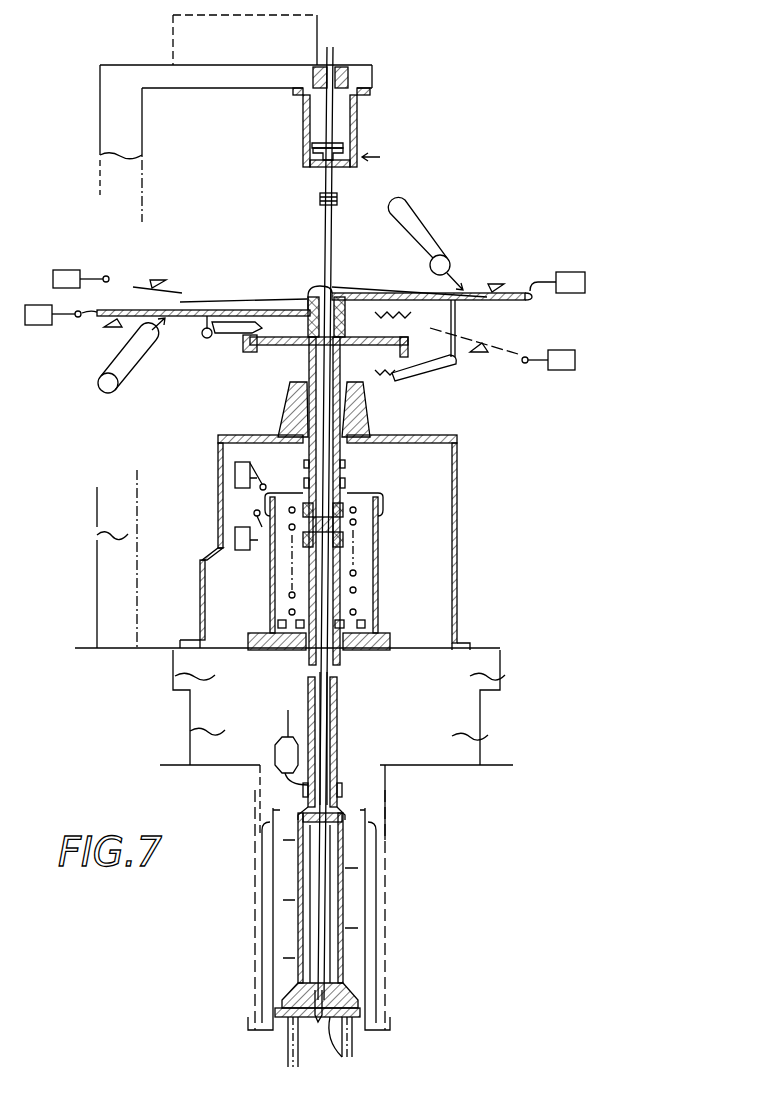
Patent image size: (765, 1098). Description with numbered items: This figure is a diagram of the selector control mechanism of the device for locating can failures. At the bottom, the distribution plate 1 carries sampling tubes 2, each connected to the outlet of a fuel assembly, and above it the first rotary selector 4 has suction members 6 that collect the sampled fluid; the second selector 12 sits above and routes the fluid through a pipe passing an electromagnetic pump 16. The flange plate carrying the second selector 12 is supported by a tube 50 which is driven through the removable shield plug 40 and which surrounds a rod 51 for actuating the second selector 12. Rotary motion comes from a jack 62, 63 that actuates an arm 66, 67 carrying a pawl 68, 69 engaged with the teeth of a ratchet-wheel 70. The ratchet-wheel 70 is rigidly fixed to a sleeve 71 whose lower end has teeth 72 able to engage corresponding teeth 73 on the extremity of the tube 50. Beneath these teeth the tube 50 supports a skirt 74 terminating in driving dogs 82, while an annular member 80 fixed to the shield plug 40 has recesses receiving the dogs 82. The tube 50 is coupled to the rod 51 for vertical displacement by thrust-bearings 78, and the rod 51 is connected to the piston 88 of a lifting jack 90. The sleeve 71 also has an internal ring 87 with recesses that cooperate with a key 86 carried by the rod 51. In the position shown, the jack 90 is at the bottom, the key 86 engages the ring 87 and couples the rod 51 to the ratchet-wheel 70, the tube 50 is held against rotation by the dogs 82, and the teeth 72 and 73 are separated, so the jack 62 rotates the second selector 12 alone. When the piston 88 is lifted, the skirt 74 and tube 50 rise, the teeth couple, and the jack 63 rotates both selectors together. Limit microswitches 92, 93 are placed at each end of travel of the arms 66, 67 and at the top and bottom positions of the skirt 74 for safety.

The lifting jack 90 is at (298, 133).
The piston 88 is at (345, 140).
The jack 62 is at (390, 222).
The arm 66 is at (465, 291).
The limit microswitch 92 is at (68, 270).
The limit microswitch 93 is at (560, 370).
The arm 67 is at (195, 309).
The jack 63 is at (110, 364).
The pawl 69 is at (205, 339).
The ratchet-wheel 70 is at (243, 350).
The sleeve 71 is at (300, 360).
The pawl 68 is at (440, 362).
The internal ring 87 is at (345, 397).
The key 86 is at (310, 395).
The teeth 72 is at (356, 468).
The teeth 73 is at (356, 485).
The skirt 74 is at (255, 572).
The thrust-bearings 78 is at (356, 550).
The rod 51 is at (338, 530).
The driving dogs 82 is at (359, 619).
The annular member 80 is at (283, 651).
The removable shield plug 40 is at (467, 721).
The tube 50 is at (338, 685).
The electromagnetic pump 16 is at (276, 750).
The second selector 12 is at (355, 812).
The first rotary selector 4 is at (356, 907).
The suction members 6 is at (357, 993).
The sampling tubes 2 is at (282, 1052).
The distribution plate 1 is at (352, 1050).